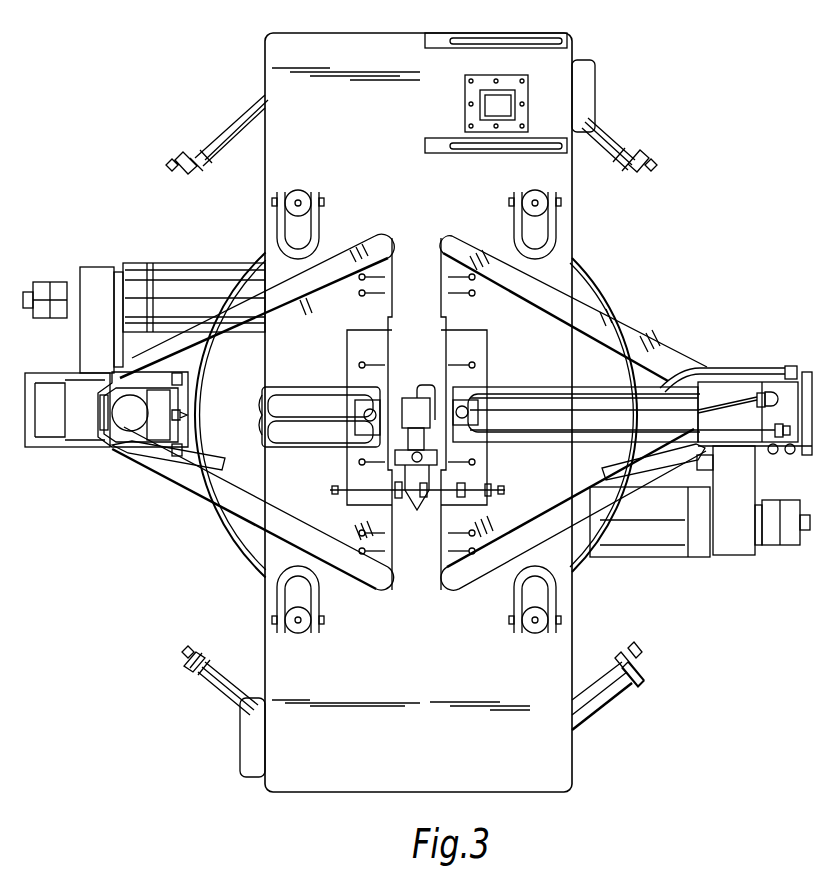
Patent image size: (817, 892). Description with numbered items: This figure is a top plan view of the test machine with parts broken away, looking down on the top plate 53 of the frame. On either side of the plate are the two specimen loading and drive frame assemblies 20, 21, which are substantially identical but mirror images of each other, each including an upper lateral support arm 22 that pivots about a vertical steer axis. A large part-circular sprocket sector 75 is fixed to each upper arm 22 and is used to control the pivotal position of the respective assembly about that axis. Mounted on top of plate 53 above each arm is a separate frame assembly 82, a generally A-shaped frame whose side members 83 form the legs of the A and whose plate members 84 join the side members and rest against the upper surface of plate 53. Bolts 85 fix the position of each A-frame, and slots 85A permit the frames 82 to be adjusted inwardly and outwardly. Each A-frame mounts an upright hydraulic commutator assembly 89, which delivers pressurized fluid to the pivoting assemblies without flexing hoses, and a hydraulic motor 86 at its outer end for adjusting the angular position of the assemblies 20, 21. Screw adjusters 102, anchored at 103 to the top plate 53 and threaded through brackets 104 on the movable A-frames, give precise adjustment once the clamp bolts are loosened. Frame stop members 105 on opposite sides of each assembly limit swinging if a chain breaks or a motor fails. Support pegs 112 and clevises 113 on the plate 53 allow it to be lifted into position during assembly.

The specimen loading and drive frame assembly 20 is at (737, 566).
The specimen loading and drive frame assembly 21 is at (58, 352).
The upper lateral support arm 22 is at (72, 430).
The top plate 53 is at (266, 45).
The sprocket sector 75 is at (245, 540).
The frame assembly 82 is at (380, 236).
The side member 83 is at (272, 314).
The plate member 84 is at (215, 460).
The bolt 85 is at (478, 540).
The slot 85A is at (358, 294).
The hydraulic motor 86 is at (126, 424).
The hydraulic commutator assembly 89 is at (372, 404).
The screw adjuster 102 is at (485, 490).
The anchor 103 is at (419, 508).
The bracket 104 is at (470, 484).
The frame stop member 105 is at (238, 120).
The support peg 112 is at (536, 196).
The clevis 113 is at (558, 238).